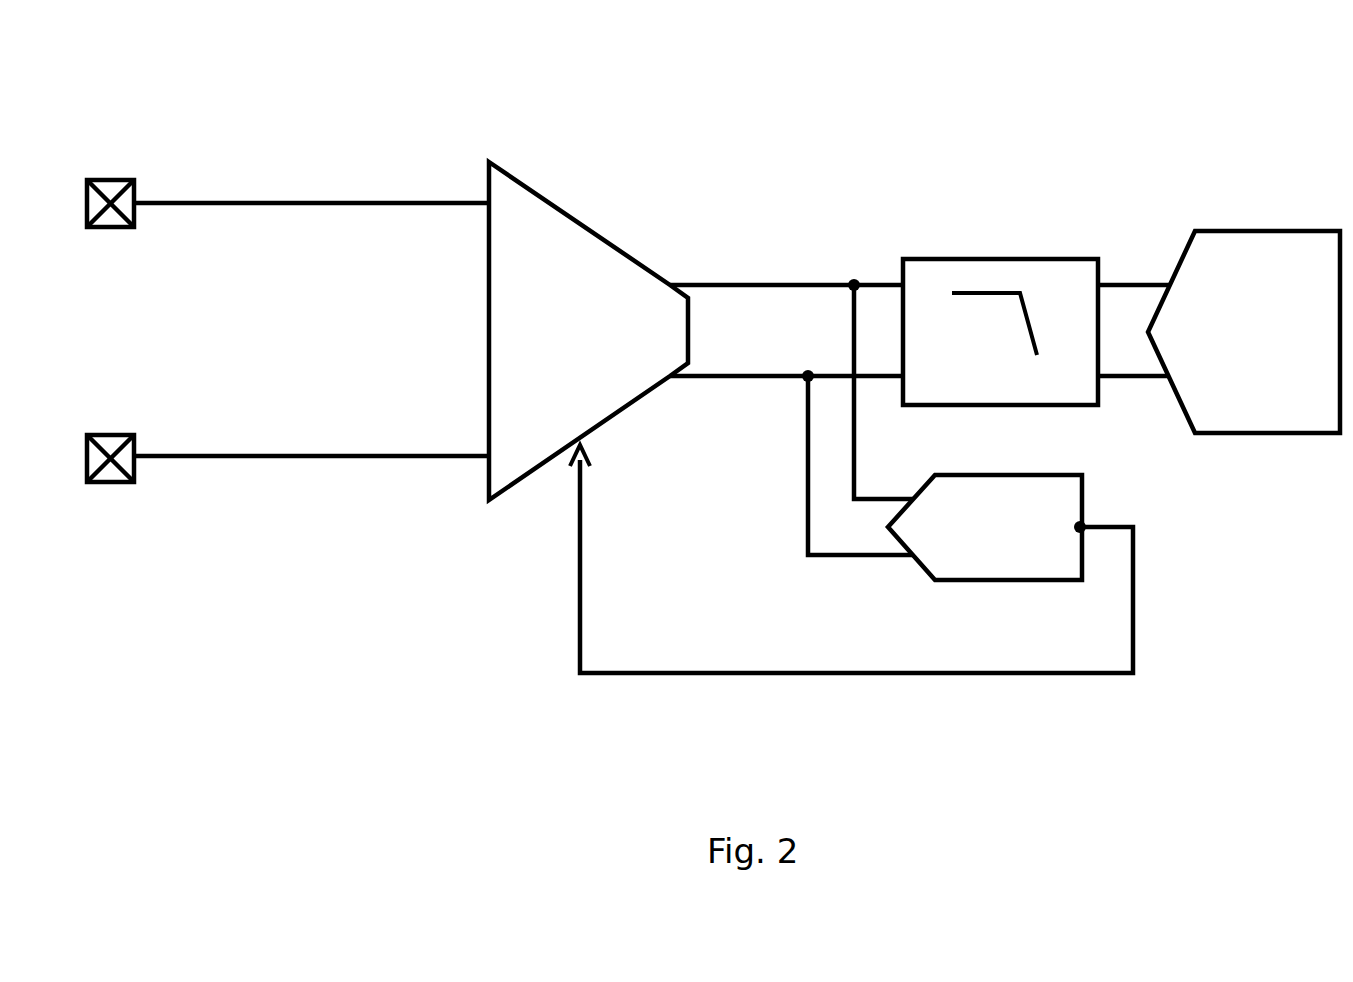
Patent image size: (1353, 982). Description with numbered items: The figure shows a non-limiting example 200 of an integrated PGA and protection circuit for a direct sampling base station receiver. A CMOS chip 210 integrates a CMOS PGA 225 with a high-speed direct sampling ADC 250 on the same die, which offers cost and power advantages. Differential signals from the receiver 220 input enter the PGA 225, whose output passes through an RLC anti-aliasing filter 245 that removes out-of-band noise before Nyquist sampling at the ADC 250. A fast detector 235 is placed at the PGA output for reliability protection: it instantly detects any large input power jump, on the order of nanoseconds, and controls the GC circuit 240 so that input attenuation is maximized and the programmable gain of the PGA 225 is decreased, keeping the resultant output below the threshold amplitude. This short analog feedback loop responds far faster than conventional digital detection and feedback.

The integrated PGA and protection circuit example 200 is at (305, 835).
The CMOS chip 210 is at (1118, 84).
The receiver 220 is at (73, 522).
The CMOS PGA 225 is at (588, 331).
The fast detector 235 is at (985, 527).
The GC circuit 240 is at (477, 711).
The RLC anti-aliasing filter 245 is at (1000, 315).
The ADC 250 is at (1244, 332).